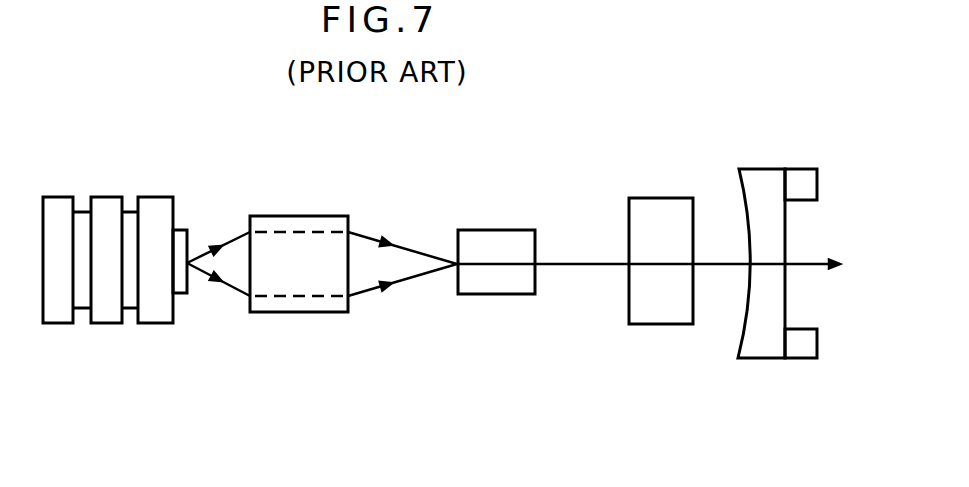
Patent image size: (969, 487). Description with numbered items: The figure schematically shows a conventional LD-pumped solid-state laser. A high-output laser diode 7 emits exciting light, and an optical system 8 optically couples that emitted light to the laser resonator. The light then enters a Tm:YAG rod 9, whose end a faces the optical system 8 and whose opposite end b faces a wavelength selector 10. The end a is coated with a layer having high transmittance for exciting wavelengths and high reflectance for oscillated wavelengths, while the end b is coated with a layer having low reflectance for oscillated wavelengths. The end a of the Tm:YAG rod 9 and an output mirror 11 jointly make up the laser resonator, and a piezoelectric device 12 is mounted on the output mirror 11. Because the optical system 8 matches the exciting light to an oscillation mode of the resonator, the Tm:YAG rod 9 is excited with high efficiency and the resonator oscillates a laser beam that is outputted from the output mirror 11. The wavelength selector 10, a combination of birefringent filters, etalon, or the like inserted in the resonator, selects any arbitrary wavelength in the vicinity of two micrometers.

The high-output laser diode 7 is at (113, 197).
The optical system 8 is at (303, 216).
The Tm:YAG rod 9 is at (498, 230).
The end a is at (458, 245).
The end b is at (535, 245).
The wavelength selector 10 is at (655, 198).
The output mirror 11 is at (760, 178).
The piezoelectric device 12 is at (805, 178).